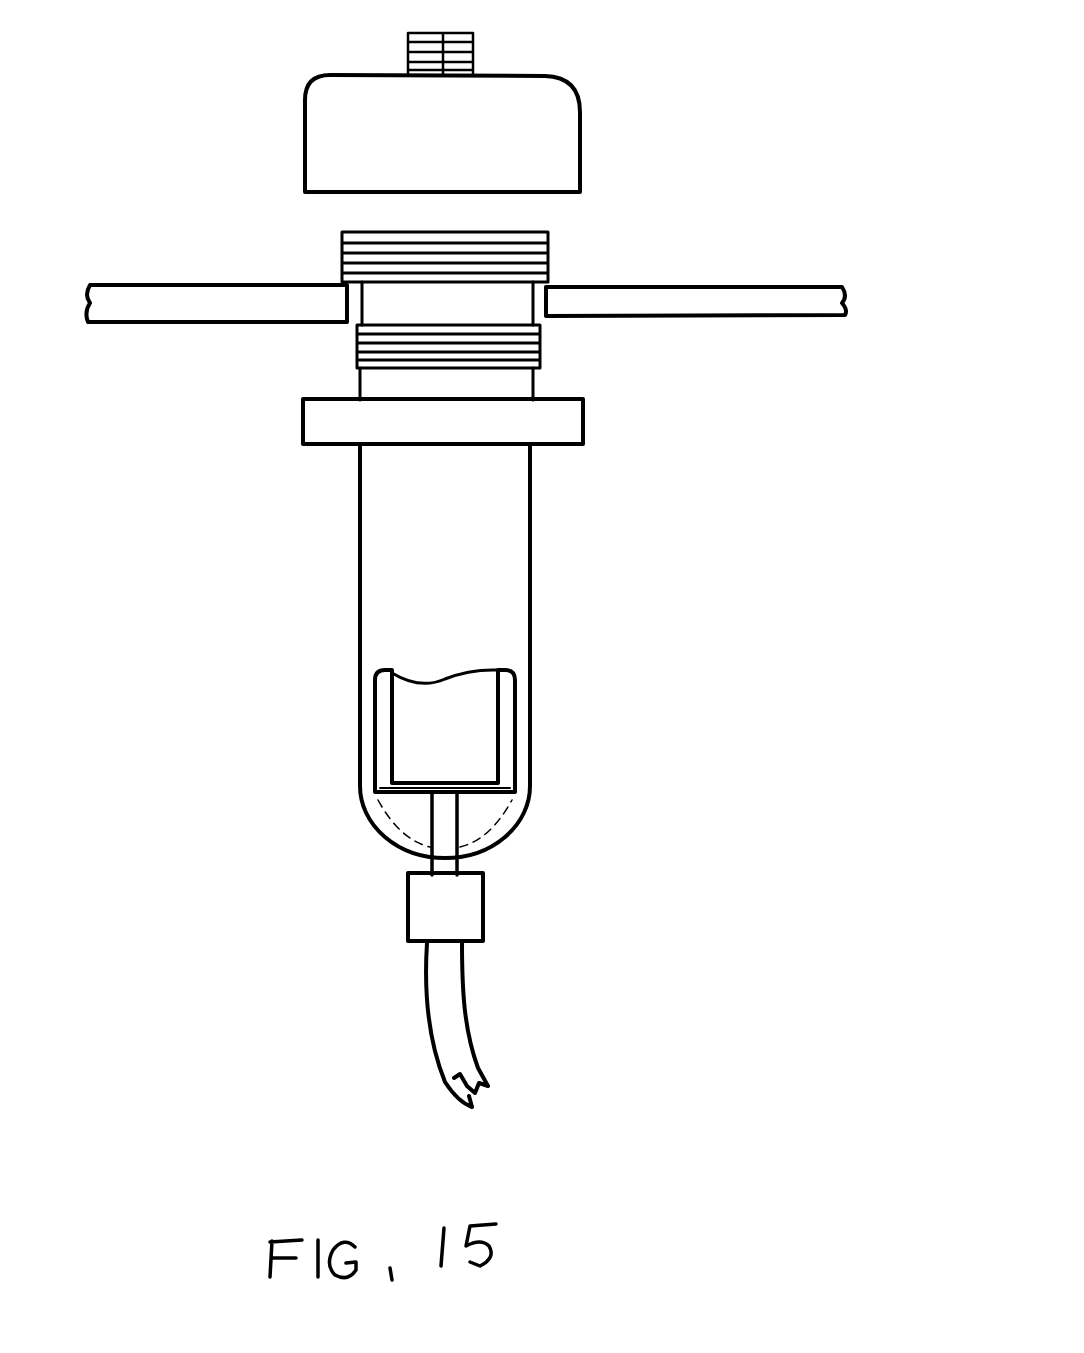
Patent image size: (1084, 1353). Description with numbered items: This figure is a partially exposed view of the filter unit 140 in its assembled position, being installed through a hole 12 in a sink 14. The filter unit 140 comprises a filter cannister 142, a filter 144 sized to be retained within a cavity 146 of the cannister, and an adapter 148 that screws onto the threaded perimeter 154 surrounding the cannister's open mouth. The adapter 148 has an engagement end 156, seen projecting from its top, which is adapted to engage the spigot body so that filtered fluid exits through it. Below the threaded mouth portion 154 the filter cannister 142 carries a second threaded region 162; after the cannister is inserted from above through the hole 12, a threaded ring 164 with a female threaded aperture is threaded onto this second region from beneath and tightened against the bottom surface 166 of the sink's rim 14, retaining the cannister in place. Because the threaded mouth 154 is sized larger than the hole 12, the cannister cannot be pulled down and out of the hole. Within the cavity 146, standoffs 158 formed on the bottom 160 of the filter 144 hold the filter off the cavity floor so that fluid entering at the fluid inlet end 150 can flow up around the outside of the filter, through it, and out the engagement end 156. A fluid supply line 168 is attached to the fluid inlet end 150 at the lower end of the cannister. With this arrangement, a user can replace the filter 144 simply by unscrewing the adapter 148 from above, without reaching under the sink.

The hole 12 is at (550, 323).
The sink 14 is at (182, 310).
The filter unit 140 is at (261, 532).
The filter cannister 142 is at (532, 558).
The filter 144 is at (478, 717).
The cavity 146 is at (377, 693).
The adapter 148 is at (611, 141).
The fluid inlet end 150 is at (462, 902).
The threaded perimeter 154 is at (552, 247).
The engagement end 156 is at (473, 55).
The standoffs 158 is at (478, 800).
The bottom 160 is at (420, 776).
The second threaded region 162 is at (355, 350).
The threaded ring 164 is at (562, 433).
The bottom surface 166 is at (773, 318).
The fluid supply line 168 is at (450, 1055).